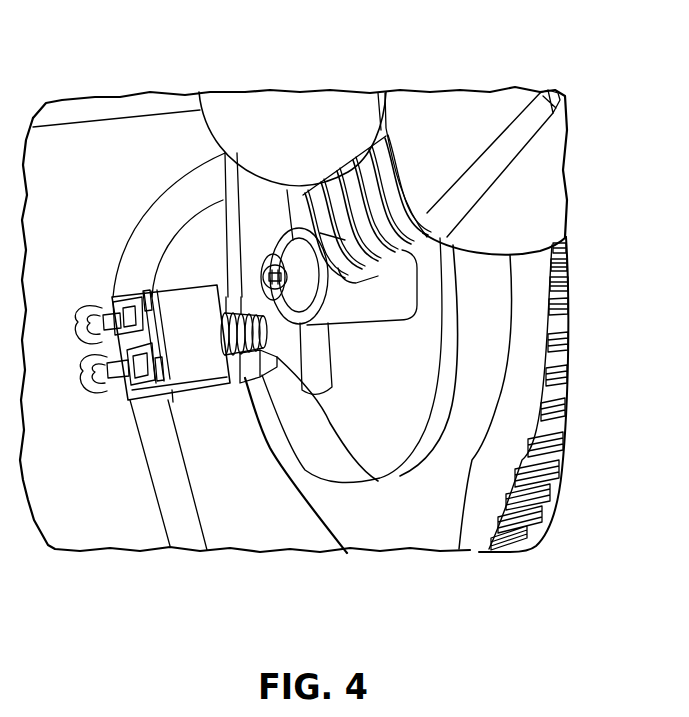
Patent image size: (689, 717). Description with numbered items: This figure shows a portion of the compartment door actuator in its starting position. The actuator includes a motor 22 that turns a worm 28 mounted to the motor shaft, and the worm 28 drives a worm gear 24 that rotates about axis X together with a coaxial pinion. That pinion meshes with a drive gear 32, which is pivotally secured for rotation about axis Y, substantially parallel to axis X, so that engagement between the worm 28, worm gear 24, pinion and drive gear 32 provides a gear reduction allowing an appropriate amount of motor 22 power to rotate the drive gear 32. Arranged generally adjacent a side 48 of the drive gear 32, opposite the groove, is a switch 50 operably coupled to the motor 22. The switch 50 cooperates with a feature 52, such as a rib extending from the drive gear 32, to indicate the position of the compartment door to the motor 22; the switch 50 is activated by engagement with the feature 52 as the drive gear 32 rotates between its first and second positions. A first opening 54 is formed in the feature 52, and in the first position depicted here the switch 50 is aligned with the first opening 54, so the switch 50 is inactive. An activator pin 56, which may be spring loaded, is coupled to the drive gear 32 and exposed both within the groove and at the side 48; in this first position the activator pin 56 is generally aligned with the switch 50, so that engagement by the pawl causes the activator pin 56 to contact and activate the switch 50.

The motor 22 is at (446, 133).
The worm gear 24 is at (265, 135).
The worm 28 is at (405, 228).
The drive gear 32 is at (512, 410).
The side 48 is at (397, 430).
The switch 50 is at (170, 313).
The feature 52 is at (337, 497).
The first opening 54 is at (222, 380).
The activator pin 56 is at (263, 290).